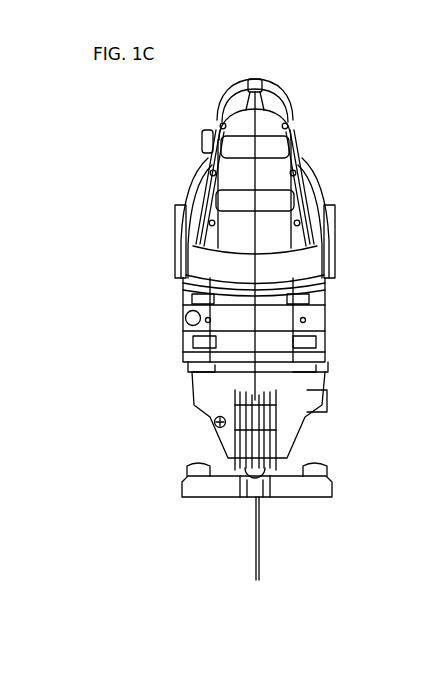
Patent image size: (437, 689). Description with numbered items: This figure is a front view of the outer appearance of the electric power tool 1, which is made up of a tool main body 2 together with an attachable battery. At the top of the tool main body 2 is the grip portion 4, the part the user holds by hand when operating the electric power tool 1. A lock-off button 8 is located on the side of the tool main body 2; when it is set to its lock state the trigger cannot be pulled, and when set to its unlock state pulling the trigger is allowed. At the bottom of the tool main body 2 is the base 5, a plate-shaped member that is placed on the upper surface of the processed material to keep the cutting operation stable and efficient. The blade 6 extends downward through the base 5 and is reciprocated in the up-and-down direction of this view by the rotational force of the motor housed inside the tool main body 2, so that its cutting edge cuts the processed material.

The electric power tool 1 is at (377, 91).
The tool main body 2 is at (280, 88).
The grip portion 4 is at (233, 82).
The base 5 is at (330, 487).
The blade 6 is at (262, 543).
The lock-off button 8 is at (201, 133).